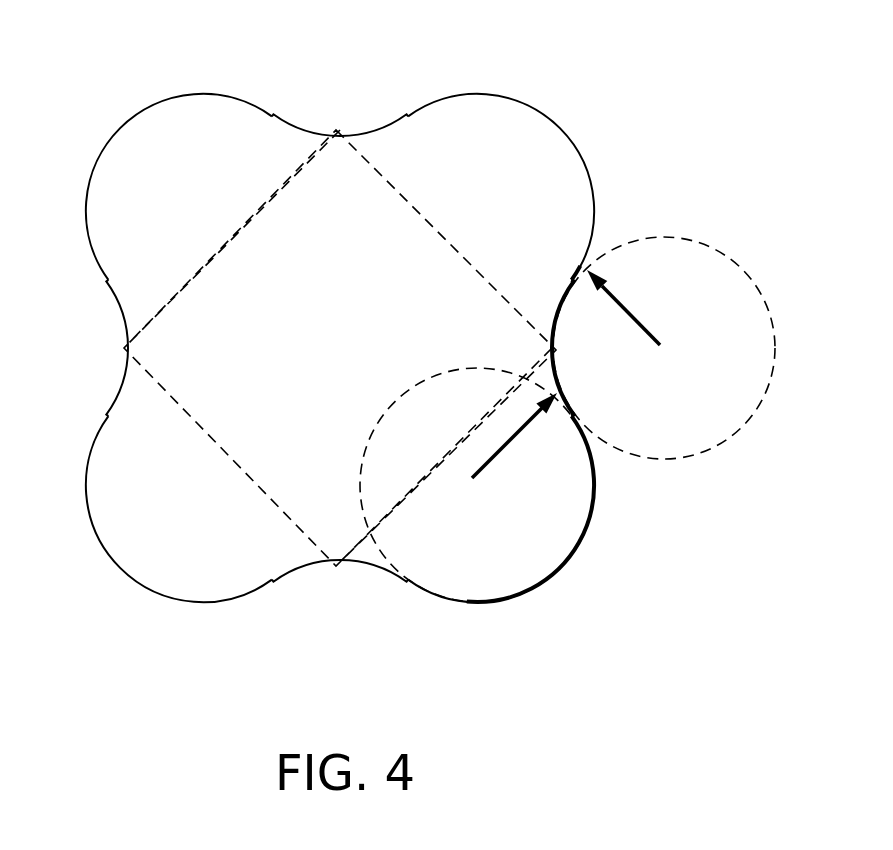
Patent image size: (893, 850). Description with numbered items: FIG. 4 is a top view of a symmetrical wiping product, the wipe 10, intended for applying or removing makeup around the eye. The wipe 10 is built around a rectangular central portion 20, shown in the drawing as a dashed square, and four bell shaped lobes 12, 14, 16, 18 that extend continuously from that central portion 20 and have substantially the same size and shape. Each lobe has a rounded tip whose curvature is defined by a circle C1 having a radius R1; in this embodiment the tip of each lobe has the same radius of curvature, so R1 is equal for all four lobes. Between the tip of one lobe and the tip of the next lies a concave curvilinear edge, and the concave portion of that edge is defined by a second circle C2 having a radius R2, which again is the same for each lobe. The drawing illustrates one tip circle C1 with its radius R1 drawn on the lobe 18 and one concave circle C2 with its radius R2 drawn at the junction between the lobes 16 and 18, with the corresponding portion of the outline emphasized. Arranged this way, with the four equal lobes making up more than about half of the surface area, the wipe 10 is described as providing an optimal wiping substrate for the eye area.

The wipe 10 is at (613, 68).
The bell shaped lobe 12 is at (138, 538).
The bell shaped lobe 14 is at (183, 120).
The bell shaped lobe 16 is at (555, 162).
The bell shaped lobe 18 is at (513, 545).
The rectangular central portion 20 is at (275, 445).
The circle C1 is at (477, 485).
The radius R1 is at (514, 444).
The circle C2 is at (664, 348).
The radius R2 is at (629, 307).